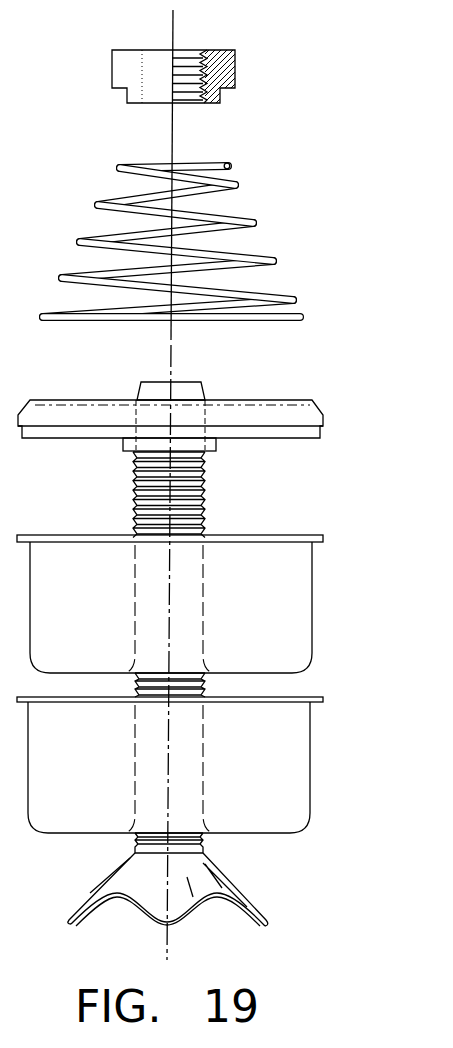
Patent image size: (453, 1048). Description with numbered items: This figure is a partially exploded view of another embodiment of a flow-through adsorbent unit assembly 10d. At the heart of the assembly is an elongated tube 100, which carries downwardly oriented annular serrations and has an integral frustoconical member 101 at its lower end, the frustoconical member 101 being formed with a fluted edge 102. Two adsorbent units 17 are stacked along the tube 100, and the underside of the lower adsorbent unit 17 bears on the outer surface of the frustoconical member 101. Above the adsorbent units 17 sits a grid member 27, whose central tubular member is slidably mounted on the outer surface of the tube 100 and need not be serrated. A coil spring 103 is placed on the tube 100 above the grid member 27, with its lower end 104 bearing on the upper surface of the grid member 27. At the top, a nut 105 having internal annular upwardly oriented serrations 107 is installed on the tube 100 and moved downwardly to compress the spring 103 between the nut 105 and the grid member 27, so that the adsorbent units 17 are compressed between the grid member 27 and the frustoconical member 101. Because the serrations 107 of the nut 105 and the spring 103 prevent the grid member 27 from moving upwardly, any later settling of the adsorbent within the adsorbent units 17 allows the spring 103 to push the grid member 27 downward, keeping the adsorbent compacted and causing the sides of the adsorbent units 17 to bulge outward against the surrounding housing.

The adsorbent unit assembly 10d is at (195, 489).
The nut 105 is at (217, 51).
The internal annular upwardly oriented serrations 107 is at (199, 63).
The coil spring 103 is at (203, 258).
The lower end 104 is at (243, 322).
The grid member 27 is at (264, 400).
The elongated tube 100 is at (204, 505).
The adsorbent units 17 is at (311, 616).
The frustoconical member 101 is at (216, 915).
The fluted edge 102 is at (240, 912).